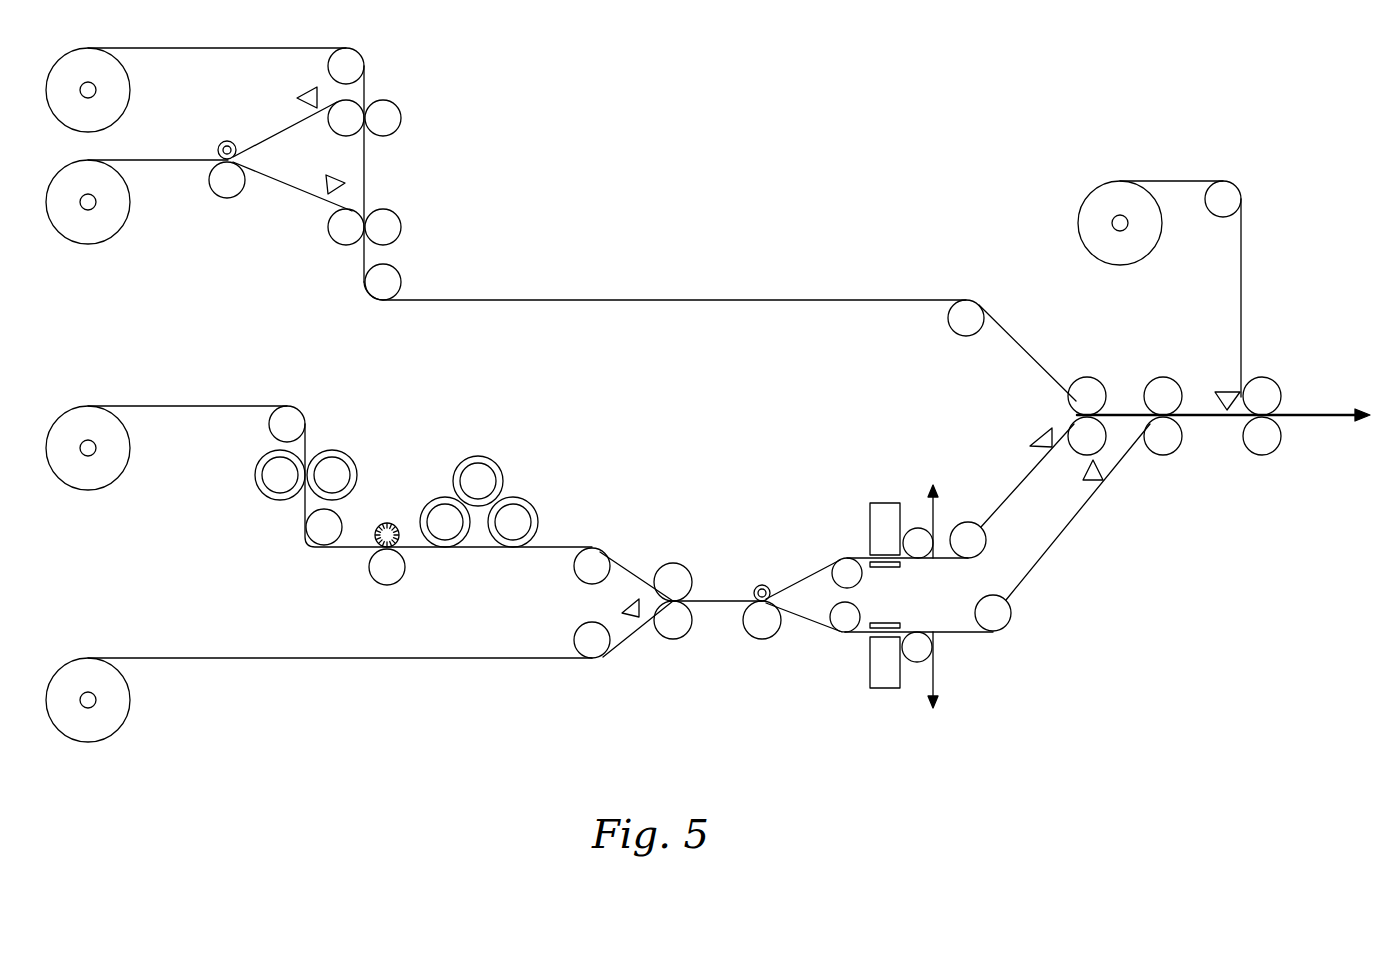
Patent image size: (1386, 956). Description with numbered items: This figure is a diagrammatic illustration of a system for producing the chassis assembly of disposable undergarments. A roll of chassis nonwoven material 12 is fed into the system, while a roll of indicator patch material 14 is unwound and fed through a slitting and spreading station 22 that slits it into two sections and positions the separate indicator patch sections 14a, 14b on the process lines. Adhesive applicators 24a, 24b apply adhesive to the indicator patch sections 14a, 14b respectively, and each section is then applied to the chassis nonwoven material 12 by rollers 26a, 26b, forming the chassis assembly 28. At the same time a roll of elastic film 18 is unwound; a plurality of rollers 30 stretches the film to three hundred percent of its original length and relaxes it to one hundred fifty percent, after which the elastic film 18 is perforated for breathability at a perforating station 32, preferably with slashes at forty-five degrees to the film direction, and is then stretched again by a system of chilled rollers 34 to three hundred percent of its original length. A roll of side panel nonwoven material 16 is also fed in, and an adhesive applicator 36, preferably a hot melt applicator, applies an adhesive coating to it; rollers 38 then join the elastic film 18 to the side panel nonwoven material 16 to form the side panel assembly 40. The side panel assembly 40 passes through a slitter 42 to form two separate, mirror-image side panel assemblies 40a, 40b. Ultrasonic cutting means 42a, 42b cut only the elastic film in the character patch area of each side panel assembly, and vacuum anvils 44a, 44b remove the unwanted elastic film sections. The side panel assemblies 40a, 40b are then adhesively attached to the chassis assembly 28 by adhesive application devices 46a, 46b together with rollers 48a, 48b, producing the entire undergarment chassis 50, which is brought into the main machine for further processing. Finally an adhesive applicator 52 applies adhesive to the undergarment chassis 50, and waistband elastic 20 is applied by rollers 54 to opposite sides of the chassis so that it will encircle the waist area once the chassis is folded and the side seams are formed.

The chassis nonwoven material 12 is at (161, 77).
The indicator patch material 14 is at (161, 189).
The indicator patch section 14a is at (281, 128).
The indicator patch section 14b is at (272, 185).
The side panel nonwoven material 16 is at (161, 694).
The elastic film 18 is at (161, 436).
The waistband elastic 20 is at (1192, 216).
The slitting and spreading station 22 is at (221, 143).
The adhesive applicator 24a is at (304, 93).
The adhesive applicator 24b is at (325, 184).
The rollers 26a is at (395, 118).
The rollers 26b is at (395, 228).
The chassis assembly 28 is at (541, 298).
The rollers 30 is at (334, 474).
The perforating station 32 is at (388, 526).
The chilled rollers 34 is at (476, 470).
The adhesive applicator 36 is at (637, 622).
The rollers 38 is at (677, 578).
The side panel assembly 40 is at (723, 600).
The side panel assembly 40a is at (800, 580).
The side panel assembly 40b is at (798, 617).
The slitter 42 is at (755, 619).
The ultrasonic cutting means 42a is at (884, 516).
The ultrasonic cutting means 42b is at (881, 676).
The vacuum anvil 44a is at (920, 537).
The vacuum anvil 44b is at (921, 645).
The adhesive application device 46a is at (1029, 440).
The adhesive application device 46b is at (1097, 490).
The rollers 48a is at (1090, 390).
The rollers 48b is at (1160, 390).
The undergarment chassis 50 is at (1197, 418).
The adhesive applicator 52 is at (1223, 390).
The rollers 54 is at (1276, 392).